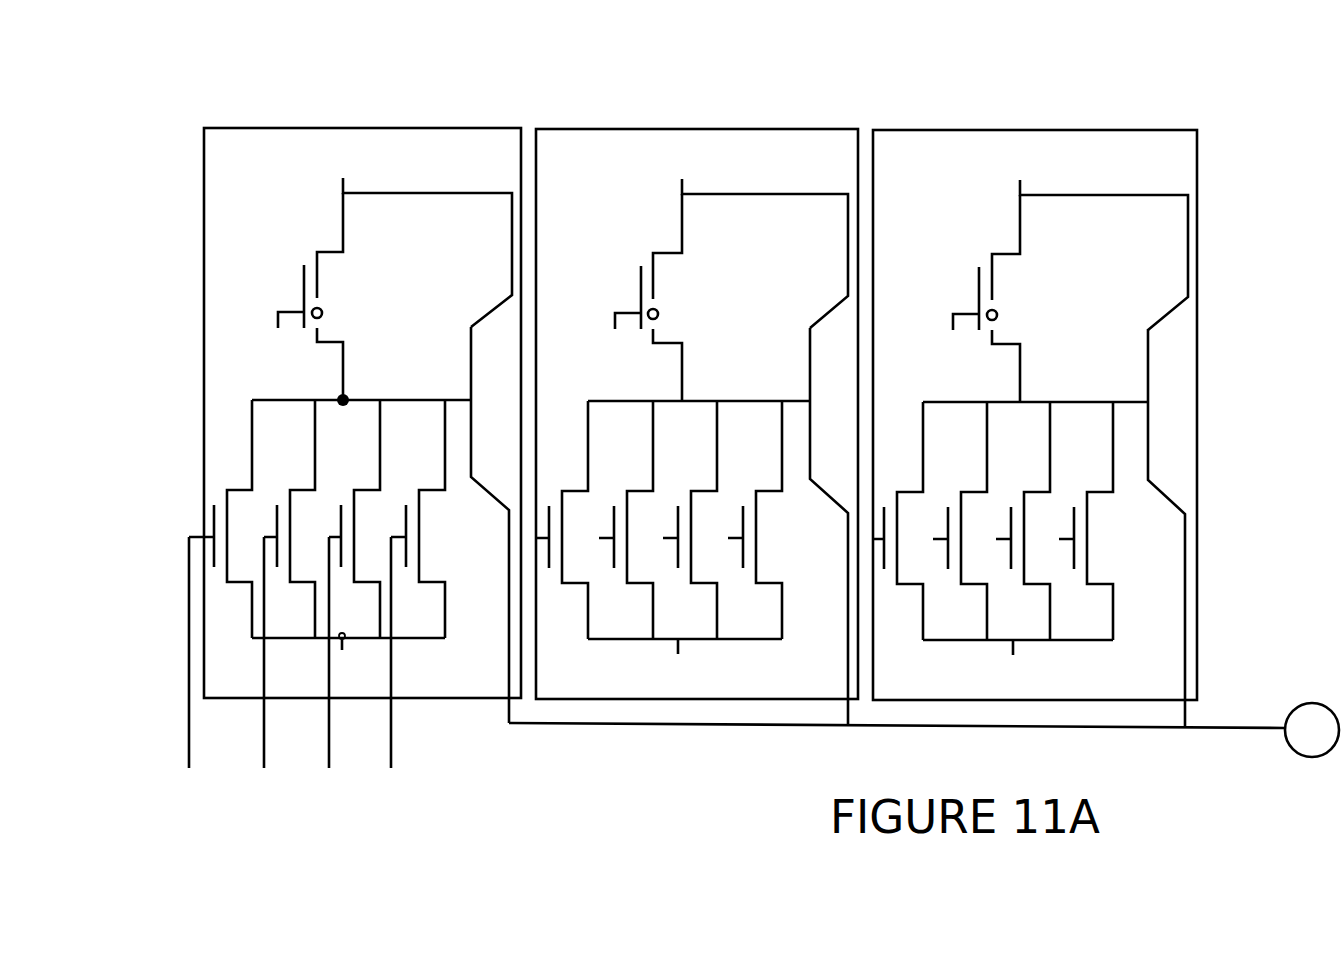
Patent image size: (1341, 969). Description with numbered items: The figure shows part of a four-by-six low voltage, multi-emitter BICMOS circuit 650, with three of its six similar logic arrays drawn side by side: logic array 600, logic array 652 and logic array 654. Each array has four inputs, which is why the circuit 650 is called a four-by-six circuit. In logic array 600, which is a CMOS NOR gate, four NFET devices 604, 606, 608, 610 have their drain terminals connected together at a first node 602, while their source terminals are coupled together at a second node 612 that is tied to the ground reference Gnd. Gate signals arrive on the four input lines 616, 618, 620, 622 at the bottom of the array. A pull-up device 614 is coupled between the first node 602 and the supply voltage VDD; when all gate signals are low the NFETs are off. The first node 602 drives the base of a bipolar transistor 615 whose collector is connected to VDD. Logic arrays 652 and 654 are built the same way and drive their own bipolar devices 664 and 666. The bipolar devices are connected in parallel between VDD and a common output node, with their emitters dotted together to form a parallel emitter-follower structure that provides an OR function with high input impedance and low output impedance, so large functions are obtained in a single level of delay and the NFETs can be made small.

The BICMOS circuit 650 is at (764, 434).
The logic array 600 is at (375, 128).
The logic array 652 is at (710, 129).
The logic array 654 is at (1038, 130).
The pull-up device 614 is at (301, 284).
The bipolar output transistor 615 is at (467, 353).
The first node 602 is at (348, 397).
The NFET device 604 is at (240, 489).
The NFET device 606 is at (302, 489).
The NFET device 608 is at (366, 489).
The NFET device 610 is at (430, 489).
The second node 612 is at (345, 636).
The input line 616 is at (189, 747).
The input line 618 is at (264, 747).
The input line 620 is at (329, 747).
The input line 622 is at (391, 748).
The bipolar device 664 is at (807, 361).
The bipolar device 666 is at (1145, 363).